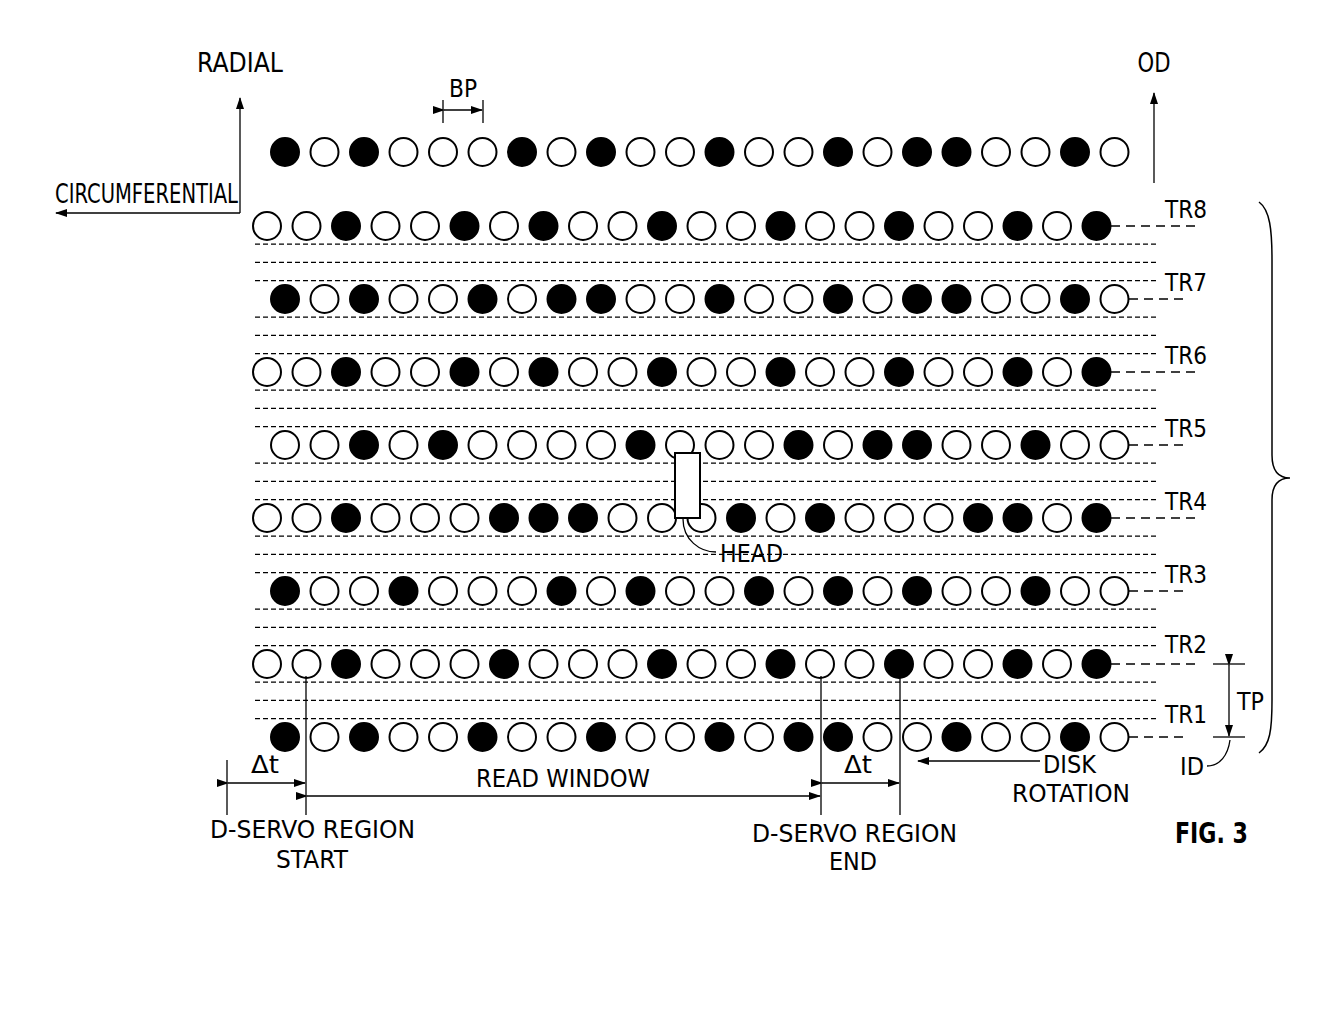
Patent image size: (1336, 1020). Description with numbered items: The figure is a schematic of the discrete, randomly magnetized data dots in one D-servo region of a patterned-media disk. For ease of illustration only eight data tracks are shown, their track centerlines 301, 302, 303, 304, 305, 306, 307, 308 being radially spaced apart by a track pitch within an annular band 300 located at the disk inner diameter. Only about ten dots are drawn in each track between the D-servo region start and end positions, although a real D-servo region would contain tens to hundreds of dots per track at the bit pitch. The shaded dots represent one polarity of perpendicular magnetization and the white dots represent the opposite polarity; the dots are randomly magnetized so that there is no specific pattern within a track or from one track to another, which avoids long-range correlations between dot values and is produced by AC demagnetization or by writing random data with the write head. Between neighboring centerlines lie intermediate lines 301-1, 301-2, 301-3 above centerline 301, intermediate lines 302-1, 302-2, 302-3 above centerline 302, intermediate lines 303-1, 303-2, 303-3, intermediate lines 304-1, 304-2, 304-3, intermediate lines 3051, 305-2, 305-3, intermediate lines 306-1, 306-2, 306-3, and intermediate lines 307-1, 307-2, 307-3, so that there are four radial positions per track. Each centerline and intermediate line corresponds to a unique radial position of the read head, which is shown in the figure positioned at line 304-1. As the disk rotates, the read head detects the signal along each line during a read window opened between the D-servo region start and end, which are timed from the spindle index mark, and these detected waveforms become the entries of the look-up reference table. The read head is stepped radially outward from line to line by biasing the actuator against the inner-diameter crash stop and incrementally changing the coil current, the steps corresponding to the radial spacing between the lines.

The annular band 300 is at (1297, 477).
The track centerline 301 is at (271, 737).
The track centerline 302 is at (253, 664).
The track centerline 303 is at (271, 591).
The track centerline 304 is at (253, 518).
The track centerline 305 is at (271, 445).
The track centerline 306 is at (253, 372).
The track centerline 307 is at (271, 299).
The track centerline 308 is at (253, 226).
The intermediate line 301-1 is at (684, 718).
The intermediate line 301-2 is at (684, 699).
The intermediate line 301-3 is at (684, 681).
The intermediate line 302-1 is at (684, 645).
The intermediate line 302-2 is at (684, 626).
The intermediate line 302-3 is at (684, 608).
The intermediate line 303-1 is at (684, 572).
The intermediate line 303-2 is at (684, 553).
The intermediate line 303-3 is at (684, 535).
The intermediate line 304-1 is at (684, 499).
The intermediate line 304-2 is at (684, 480).
The intermediate line 304-3 is at (684, 462).
The intermediate line 3051 is at (686, 426).
The intermediate line 305-2 is at (684, 407).
The intermediate line 305-3 is at (684, 389).
The intermediate line 306-1 is at (684, 353).
The intermediate line 306-2 is at (684, 334).
The intermediate line 306-3 is at (684, 316).
The intermediate line 307-1 is at (684, 280).
The intermediate line 307-2 is at (684, 261).
The intermediate line 307-3 is at (684, 243).